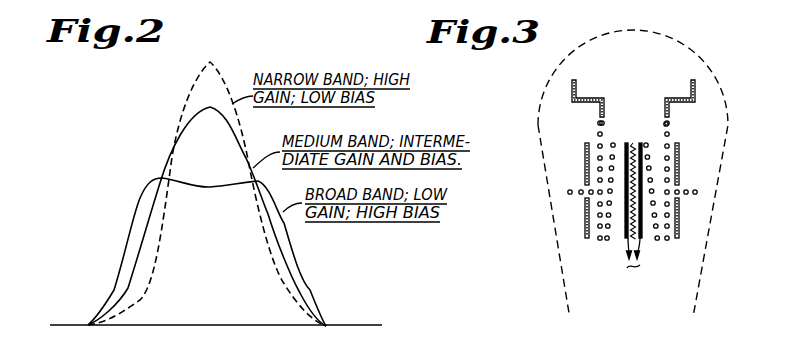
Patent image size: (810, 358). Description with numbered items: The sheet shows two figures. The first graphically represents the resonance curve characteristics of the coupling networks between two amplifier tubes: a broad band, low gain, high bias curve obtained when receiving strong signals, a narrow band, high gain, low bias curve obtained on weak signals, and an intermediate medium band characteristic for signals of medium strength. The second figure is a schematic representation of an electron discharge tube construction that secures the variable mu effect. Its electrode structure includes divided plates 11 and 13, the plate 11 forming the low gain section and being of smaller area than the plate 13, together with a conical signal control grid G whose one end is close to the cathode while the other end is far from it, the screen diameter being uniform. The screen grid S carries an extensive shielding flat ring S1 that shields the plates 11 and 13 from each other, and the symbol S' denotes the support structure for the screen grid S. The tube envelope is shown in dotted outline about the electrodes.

The plate 11 is at (585, 155).
The plate 13 is at (585, 226).
The screen grid S is at (622, 202).
The conical signal control grid G is at (607, 242).
The support structure S' is at (666, 94).
The shielding flat ring S1 is at (700, 192).